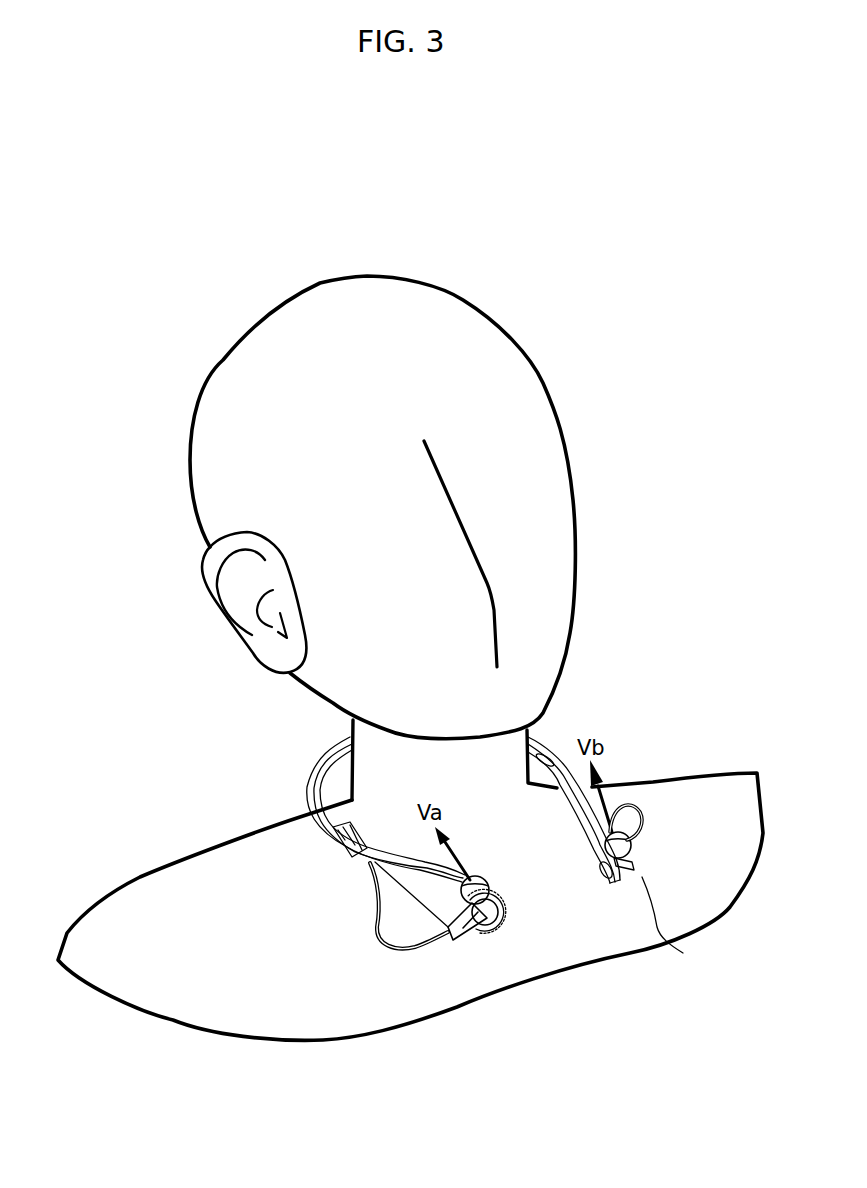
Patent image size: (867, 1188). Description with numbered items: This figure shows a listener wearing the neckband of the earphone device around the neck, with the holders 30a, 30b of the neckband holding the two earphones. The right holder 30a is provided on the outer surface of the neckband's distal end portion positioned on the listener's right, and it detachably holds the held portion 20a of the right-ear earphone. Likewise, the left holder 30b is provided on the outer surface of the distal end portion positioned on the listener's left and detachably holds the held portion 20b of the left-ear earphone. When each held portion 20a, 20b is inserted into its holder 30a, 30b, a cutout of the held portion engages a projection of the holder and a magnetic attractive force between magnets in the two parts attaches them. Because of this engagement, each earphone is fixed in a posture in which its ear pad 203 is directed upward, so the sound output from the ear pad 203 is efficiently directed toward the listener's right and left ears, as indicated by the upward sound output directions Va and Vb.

The ear pad 203 is at (497, 880).
The held portion 20a is at (500, 933).
The held portion 20b is at (684, 925).
The holder 30a is at (513, 917).
The holder 30b is at (628, 880).